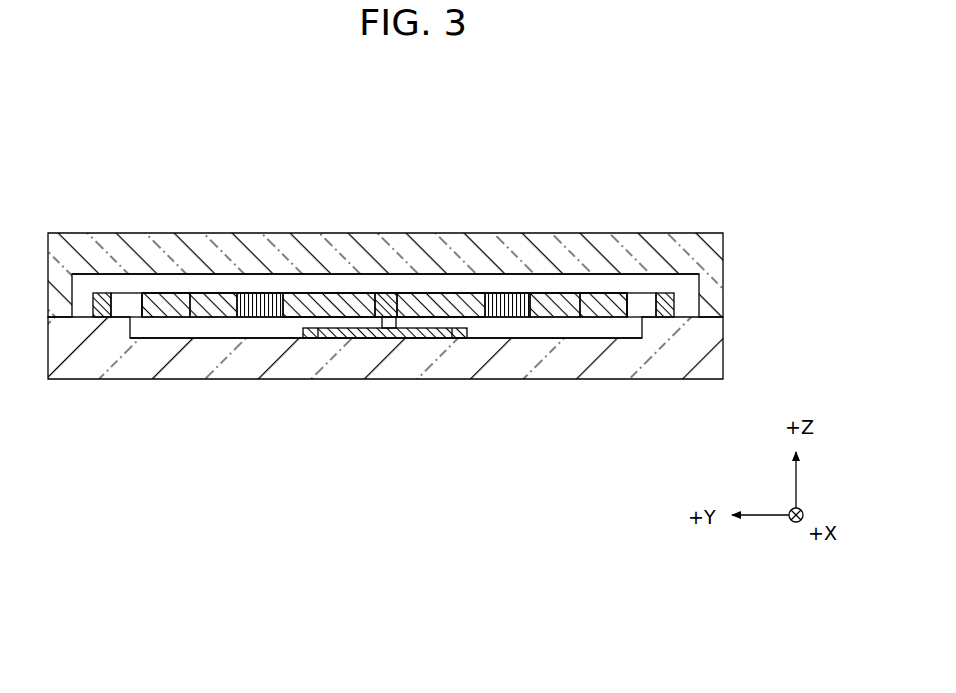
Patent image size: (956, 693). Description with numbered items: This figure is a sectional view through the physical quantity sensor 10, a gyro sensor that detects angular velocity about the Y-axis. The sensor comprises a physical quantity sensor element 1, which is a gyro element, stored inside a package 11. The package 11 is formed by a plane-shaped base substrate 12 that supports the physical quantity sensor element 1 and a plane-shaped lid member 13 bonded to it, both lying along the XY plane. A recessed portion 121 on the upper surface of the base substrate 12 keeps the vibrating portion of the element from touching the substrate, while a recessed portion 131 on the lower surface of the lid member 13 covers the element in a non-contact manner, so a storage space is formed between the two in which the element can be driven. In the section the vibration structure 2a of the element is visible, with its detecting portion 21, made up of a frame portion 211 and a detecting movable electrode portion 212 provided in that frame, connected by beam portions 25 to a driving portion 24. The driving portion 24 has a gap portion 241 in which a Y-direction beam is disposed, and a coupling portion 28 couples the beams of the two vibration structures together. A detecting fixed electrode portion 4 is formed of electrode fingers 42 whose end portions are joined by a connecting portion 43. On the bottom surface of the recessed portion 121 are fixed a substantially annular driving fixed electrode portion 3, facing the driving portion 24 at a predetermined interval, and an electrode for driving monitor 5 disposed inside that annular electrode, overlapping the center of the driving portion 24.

The physical quantity sensor 10 is at (434, 251).
The package 11 is at (434, 306).
The base substrate 12 is at (412, 370).
The recessed portion 121 is at (536, 338).
The lid member 13 is at (412, 253).
The recessed portion 131 is at (337, 276).
The physical quantity sensor element 1 is at (398, 305).
The vibration structure 2a is at (437, 284).
The detecting portion 21 is at (398, 255).
The frame portion 211 is at (221, 305).
The detecting movable electrode portion 212 is at (150, 305).
The driving portion 24 is at (413, 295).
The gap portion 241 is at (398, 320).
The beam portion 25 is at (277, 293).
The coupling portion 28 is at (381, 326).
The driving fixed electrode portion 3 is at (458, 336).
The detecting fixed electrode portion 4 is at (402, 307).
The electrode finger 42 is at (118, 308).
The connecting portion 43 is at (100, 300).
The electrode for driving monitor 5 is at (391, 305).